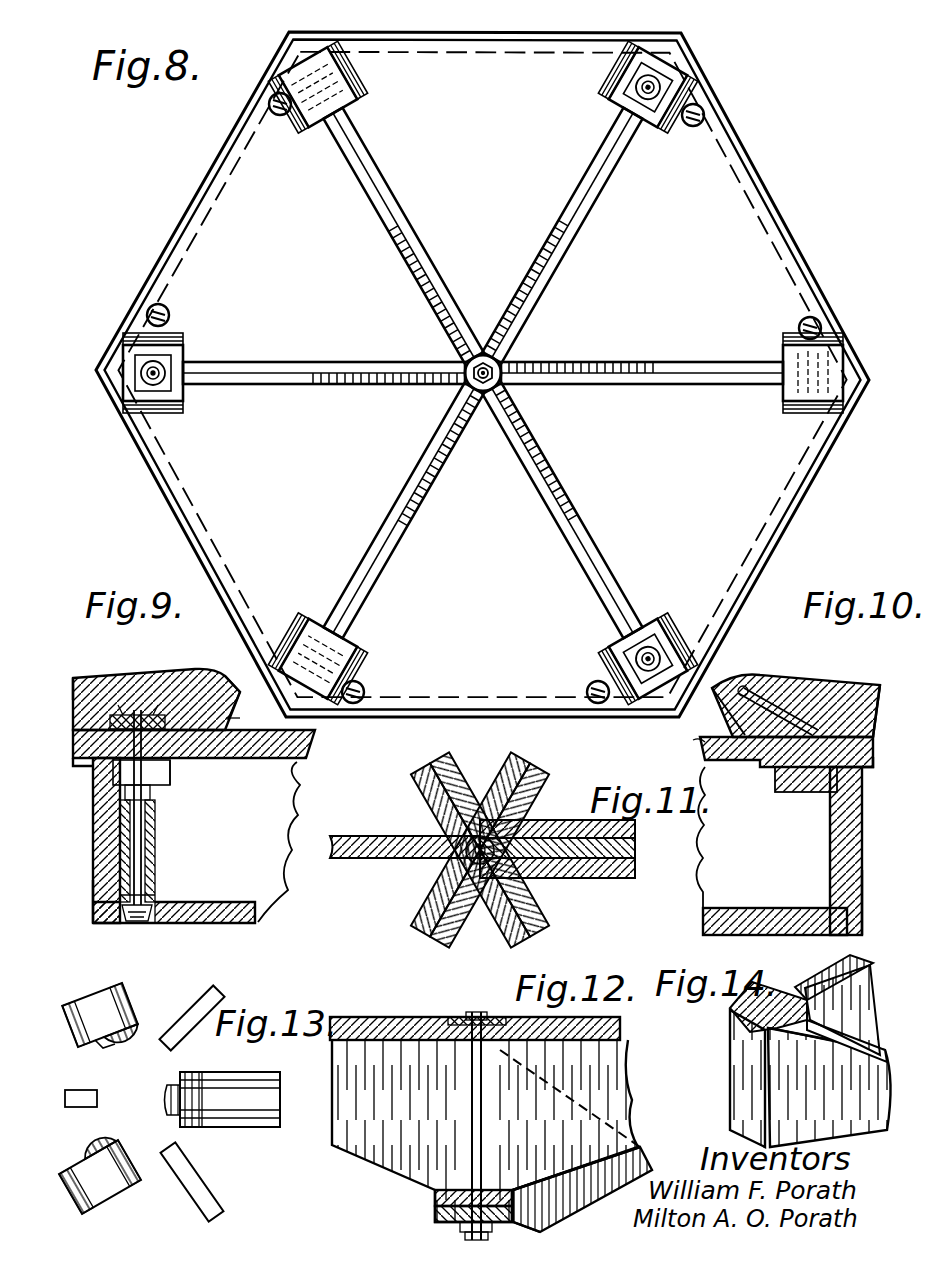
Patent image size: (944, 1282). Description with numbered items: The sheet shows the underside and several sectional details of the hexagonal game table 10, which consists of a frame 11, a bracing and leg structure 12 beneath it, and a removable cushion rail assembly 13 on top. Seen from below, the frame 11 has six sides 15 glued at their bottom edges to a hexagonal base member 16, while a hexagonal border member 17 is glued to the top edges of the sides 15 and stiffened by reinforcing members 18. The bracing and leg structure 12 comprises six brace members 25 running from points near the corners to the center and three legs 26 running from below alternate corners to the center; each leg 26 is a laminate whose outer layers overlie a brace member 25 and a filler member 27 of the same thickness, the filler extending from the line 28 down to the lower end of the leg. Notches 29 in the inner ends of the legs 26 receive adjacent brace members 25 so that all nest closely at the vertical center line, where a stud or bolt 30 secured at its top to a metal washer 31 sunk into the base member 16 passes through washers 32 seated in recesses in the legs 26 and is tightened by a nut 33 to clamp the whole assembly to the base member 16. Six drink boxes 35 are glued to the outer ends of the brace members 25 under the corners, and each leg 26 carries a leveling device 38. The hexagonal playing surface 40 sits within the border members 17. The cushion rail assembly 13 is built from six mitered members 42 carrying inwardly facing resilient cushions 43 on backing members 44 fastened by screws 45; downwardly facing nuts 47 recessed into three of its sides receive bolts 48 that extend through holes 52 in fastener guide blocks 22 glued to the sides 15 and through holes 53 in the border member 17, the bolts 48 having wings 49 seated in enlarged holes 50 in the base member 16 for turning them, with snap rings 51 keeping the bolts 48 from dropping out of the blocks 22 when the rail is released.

In FIG. 8, the game table 10 is at (788, 185).
In FIG. 8, the frame 11 is at (806, 262).
In FIG. 9, the frame 11 is at (92, 876).
In FIG. 10, the frame 11 is at (862, 896).
In FIG. 8, the bracing and leg structure 12 is at (483, 373).
In FIG. 11, the bracing and leg structure 12 is at (510, 857).
In FIG. 9, the removable cushion rail assembly 13 is at (86, 676).
In FIG. 10, the removable cushion rail assembly 13 is at (857, 683).
In FIG. 8, the sides 15 is at (655, 40).
In FIG. 9, the sides 15 is at (100, 838).
In FIG. 10, the sides 15 is at (848, 846).
In FIG. 8, the base member 16 is at (650, 568).
In FIG. 9, the base member 16 is at (248, 926).
In FIG. 10, the base member 16 is at (765, 912).
In FIG. 12, the base member 16 is at (366, 1016).
In FIG. 9, the border member 17 is at (80, 762).
In FIG. 10, the border member 17 is at (872, 772).
In FIG. 9, the reinforcing members 18 is at (180, 780).
In FIG. 10, the reinforcing members 18 is at (800, 795).
In FIG. 9, the fastener guide blocks 22 is at (156, 860).
In FIG. 8, the brace members 25 is at (605, 150).
In FIG. 11, the brace members 25 is at (440, 780).
In FIG. 12, the brace members 25 is at (370, 1150).
In FIG. 13, the brace members 25 is at (238, 1212).
In FIG. 14, the brace members 25 is at (830, 958).
In FIG. 8, the legs 26 is at (568, 268).
In FIG. 11, the legs 26 is at (460, 782).
In FIG. 12, the legs 26 is at (520, 1228).
In FIG. 13, the legs 26 is at (118, 988).
In FIG. 14, the legs 26 is at (810, 1078).
In FIG. 8, the filler member 27 is at (548, 268).
In FIG. 12, the filler member 27 is at (640, 1160).
In FIG. 8, the line 28 is at (560, 240).
In FIG. 12, the line 28 is at (582, 1162).
In FIG. 11, the notches 29 is at (498, 795).
In FIG. 13, the notches 29 is at (128, 1040).
In FIG. 14, the notches 29 is at (742, 1002).
In FIG. 11, the stud or bolt 30 is at (450, 858).
In FIG. 12, the stud or bolt 30 is at (470, 1142).
In FIG. 12, the metal washer 31 is at (460, 1016).
In FIG. 8, the washers 32 is at (500, 365).
In FIG. 12, the washers 32 is at (435, 1200).
In FIG. 8, the nut 33 is at (470, 385).
In FIG. 12, the nut 33 is at (460, 1232).
In FIG. 8, the drink boxes 35 is at (355, 78).
In FIG. 8, the leveling device 38 is at (632, 96).
In FIG. 9, the playing surface 40 is at (310, 750).
In FIG. 10, the playing surface 40 is at (730, 757).
In FIG. 9, the mitered members 42 is at (172, 670).
In FIG. 10, the mitered members 42 is at (816, 680).
In FIG. 9, the resilient cushions 43 is at (234, 688).
In FIG. 10, the resilient cushions 43 is at (725, 688).
In FIG. 9, the backing members 44 is at (251, 716).
In FIG. 10, the backing members 44 is at (676, 762).
In FIG. 10, the screws 45 is at (776, 676).
In FIG. 9, the nuts 47 is at (135, 700).
In FIG. 9, the bolts 48 is at (158, 826).
In FIG. 8, the wings 49 is at (268, 104).
In FIG. 9, the wings 49 is at (132, 916).
In FIG. 8, the enlarged holes 50 is at (282, 118).
In FIG. 9, the enlarged holes 50 is at (150, 922).
In FIG. 9, the snap rings 51 is at (158, 800).
In FIG. 9, the holes 52 is at (156, 885).
In FIG. 9, the holes 53 is at (225, 762).